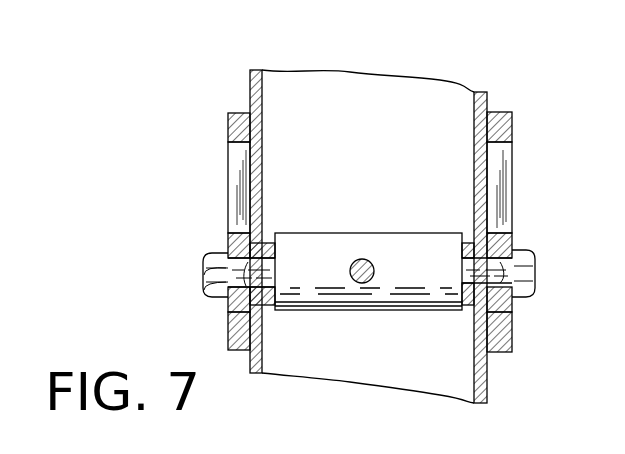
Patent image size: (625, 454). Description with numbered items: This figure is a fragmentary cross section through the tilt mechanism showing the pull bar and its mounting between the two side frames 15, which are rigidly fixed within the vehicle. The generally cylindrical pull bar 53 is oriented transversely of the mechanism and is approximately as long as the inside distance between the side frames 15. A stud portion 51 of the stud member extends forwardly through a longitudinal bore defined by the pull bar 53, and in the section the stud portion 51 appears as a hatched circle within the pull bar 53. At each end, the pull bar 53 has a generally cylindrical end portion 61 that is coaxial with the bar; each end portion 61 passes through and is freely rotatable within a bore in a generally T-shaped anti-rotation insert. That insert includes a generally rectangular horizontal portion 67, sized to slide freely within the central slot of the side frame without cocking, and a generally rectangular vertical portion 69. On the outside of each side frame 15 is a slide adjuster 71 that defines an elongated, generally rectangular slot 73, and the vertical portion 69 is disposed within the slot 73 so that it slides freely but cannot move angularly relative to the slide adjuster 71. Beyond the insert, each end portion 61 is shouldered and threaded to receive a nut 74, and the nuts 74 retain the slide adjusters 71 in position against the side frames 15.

The side frames 15 is at (254, 72).
The stud portion 51 is at (352, 272).
The pull bar 53 is at (386, 246).
The end portions 61 is at (238, 290).
The horizontal portion 67 is at (264, 245).
The vertical portion 69 is at (232, 242).
The slide adjuster 71 is at (228, 125).
The slot 73 is at (240, 186).
The nuts 74 is at (206, 270).